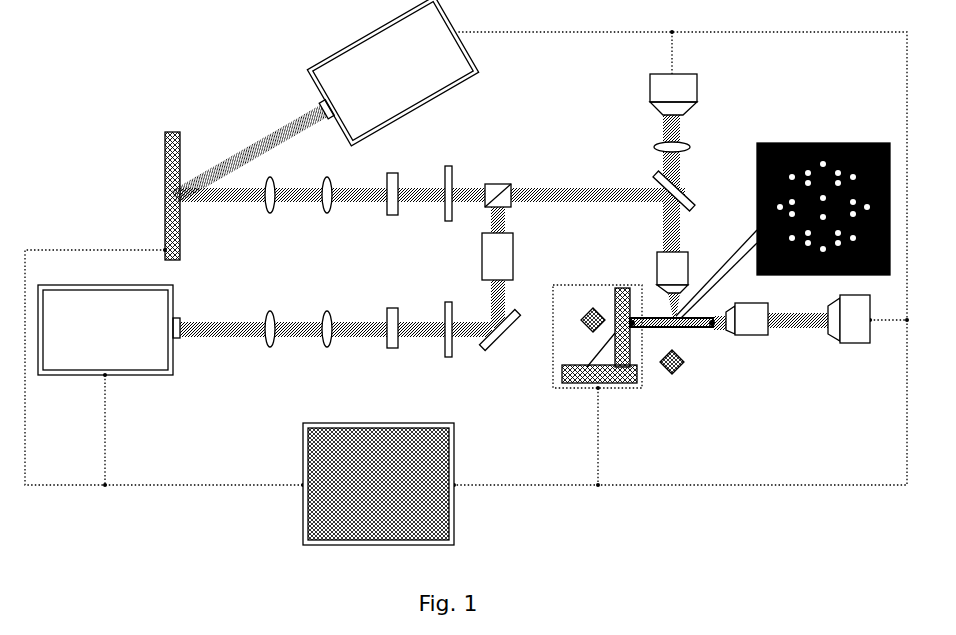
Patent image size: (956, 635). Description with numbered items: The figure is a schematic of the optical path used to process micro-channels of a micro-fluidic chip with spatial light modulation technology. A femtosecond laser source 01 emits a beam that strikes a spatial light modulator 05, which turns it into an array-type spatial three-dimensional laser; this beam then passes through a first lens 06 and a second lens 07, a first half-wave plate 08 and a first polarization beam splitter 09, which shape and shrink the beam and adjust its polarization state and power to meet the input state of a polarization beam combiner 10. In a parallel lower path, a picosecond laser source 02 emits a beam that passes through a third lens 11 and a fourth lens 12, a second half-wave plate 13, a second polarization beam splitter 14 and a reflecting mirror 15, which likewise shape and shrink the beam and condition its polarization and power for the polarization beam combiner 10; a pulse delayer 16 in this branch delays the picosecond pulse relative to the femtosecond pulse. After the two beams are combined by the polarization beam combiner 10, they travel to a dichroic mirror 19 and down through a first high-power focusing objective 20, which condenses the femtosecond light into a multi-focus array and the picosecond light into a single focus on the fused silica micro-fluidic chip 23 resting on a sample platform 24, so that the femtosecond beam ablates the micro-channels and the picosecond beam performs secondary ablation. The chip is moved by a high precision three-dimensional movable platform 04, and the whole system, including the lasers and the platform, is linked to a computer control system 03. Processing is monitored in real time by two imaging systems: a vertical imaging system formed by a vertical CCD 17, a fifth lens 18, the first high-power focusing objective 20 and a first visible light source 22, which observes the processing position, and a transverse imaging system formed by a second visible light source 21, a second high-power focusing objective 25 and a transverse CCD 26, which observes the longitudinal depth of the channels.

The femtosecond laser source 01 is at (316, 117).
The picosecond laser source 02 is at (109, 320).
The computer control system 03 is at (382, 487).
The high precision three-dimensional movable platform 04 is at (597, 299).
The spatial light modulator 05 is at (158, 140).
The first lens 06 is at (270, 184).
The second lens 07 is at (327, 184).
The first half-wave plate 08 is at (393, 185).
The first polarization beam splitter 09 is at (448, 184).
The polarization beam combiner 10 is at (498, 184).
The third lens 11 is at (270, 320).
The fourth lens 12 is at (327, 320).
The second half-wave plate 13 is at (393, 320).
The second polarization beam splitter 14 is at (449, 320).
The reflecting mirror 15 is at (500, 329).
The pulse delayer 16 is at (506, 256).
The vertical CCD 17 is at (685, 94).
The fifth lens 18 is at (687, 147).
The dichroic mirror 19 is at (686, 191).
The first high-power focusing objective 20 is at (685, 285).
The second visible light source 21 is at (593, 311).
The first visible light source 22 is at (672, 372).
The fused silica micro-fluidic chip 23 is at (672, 312).
The sample platform 24 is at (675, 333).
The second high-power focusing objective 25 is at (747, 310).
The transverse CCD 26 is at (849, 310).